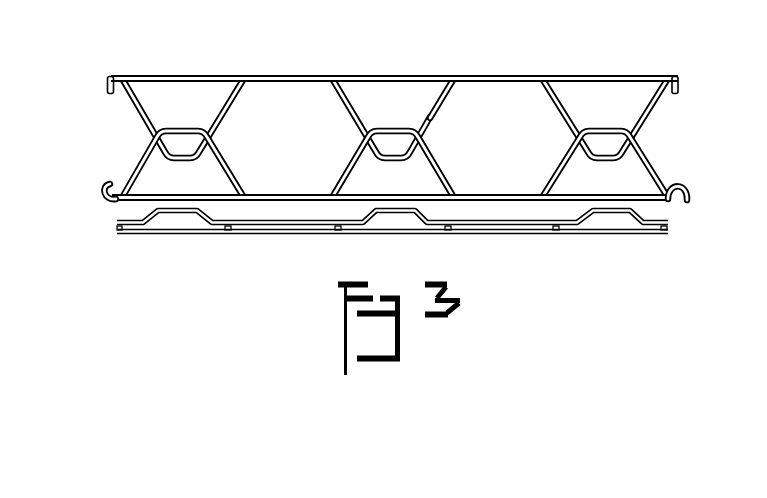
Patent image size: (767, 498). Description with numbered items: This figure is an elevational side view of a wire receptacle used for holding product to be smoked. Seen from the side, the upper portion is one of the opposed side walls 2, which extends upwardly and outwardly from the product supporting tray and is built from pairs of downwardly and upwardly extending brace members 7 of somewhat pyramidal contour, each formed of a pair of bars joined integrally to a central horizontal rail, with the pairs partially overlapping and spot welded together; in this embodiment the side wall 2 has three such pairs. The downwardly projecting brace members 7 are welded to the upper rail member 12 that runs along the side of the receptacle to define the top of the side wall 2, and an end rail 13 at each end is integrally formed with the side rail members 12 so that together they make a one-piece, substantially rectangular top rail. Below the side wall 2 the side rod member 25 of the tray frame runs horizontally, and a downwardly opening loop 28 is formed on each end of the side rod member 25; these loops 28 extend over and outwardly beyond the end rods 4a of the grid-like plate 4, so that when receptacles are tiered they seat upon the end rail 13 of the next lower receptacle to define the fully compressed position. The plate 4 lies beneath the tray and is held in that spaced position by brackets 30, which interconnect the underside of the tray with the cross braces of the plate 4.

The side wall 2 is at (397, 117).
The grid-like plate 4 is at (628, 236).
The end rod of the plate 4a is at (668, 228).
The brace member 7 is at (440, 111).
The upper rail member 12 is at (487, 75).
The end rail 13 is at (107, 88).
The side rod member 25 is at (276, 200).
The downwardly opening loop 28 is at (104, 188).
The bracket 30 is at (198, 216).